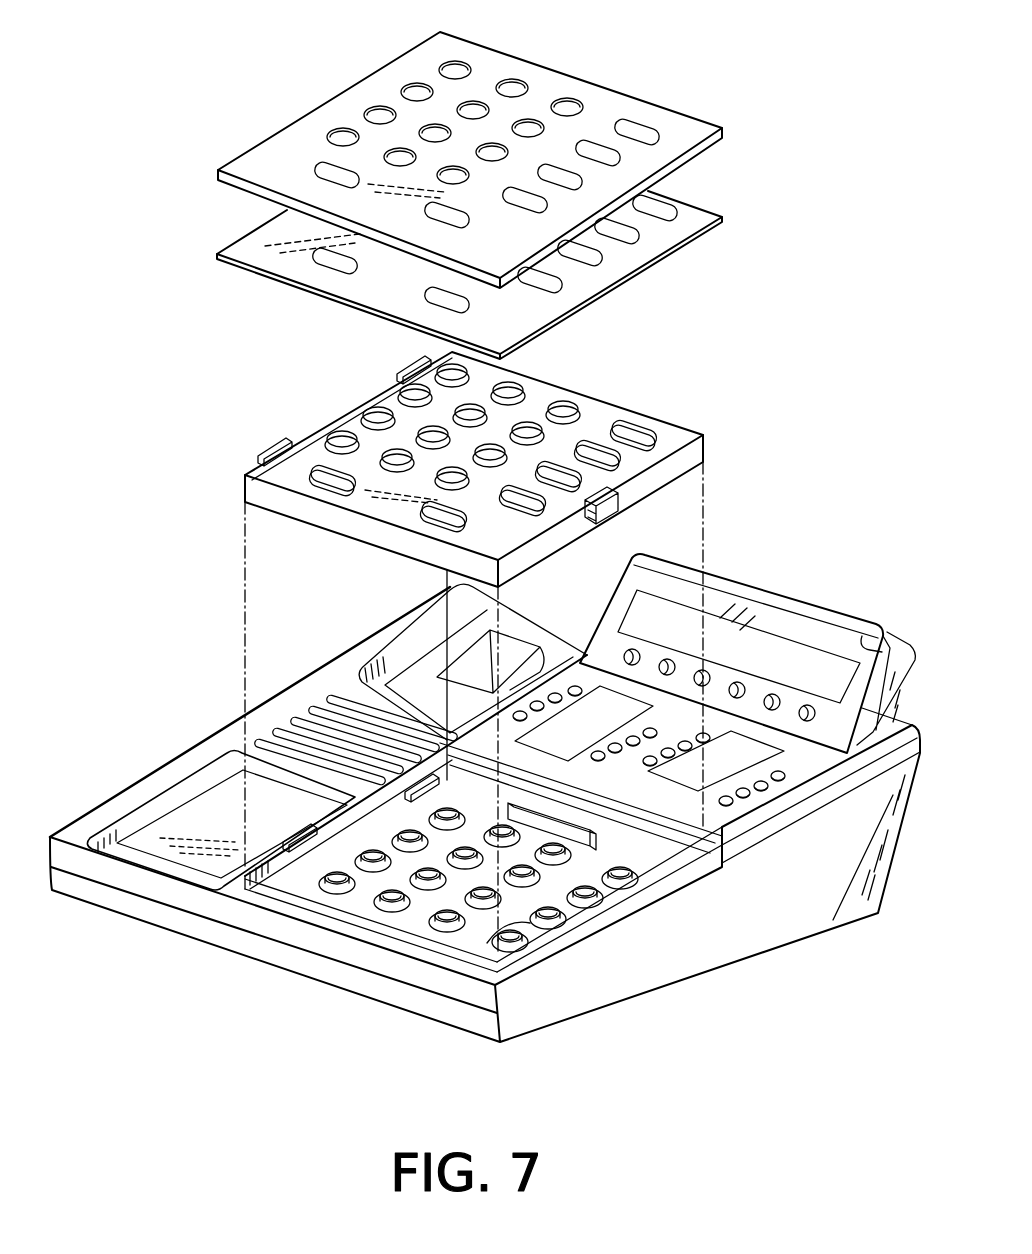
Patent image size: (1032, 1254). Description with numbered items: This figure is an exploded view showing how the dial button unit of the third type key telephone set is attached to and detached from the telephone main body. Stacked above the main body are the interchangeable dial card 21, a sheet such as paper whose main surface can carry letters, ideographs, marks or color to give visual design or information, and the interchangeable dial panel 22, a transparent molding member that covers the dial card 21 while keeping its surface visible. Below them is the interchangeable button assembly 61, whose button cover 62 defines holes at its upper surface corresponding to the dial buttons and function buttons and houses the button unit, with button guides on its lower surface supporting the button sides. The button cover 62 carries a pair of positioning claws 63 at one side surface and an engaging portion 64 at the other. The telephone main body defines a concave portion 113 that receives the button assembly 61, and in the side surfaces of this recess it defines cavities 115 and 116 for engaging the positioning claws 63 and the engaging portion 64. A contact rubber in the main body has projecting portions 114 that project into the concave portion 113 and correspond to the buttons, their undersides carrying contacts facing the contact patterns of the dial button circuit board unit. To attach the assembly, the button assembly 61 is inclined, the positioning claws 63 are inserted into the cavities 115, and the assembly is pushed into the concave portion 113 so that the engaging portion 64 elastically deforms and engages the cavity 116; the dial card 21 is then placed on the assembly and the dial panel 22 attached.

The dial card 21 is at (690, 212).
The dial panel 22 is at (660, 112).
The button assembly 61 is at (478, 432).
The button cover 62 is at (672, 440).
The positioning claws 63 is at (408, 363).
The engaging portion 64 is at (613, 520).
The concave portion 113 is at (607, 863).
The projecting portions 114 is at (560, 855).
The cavities 115 is at (300, 845).
The cavity 116 is at (617, 960).